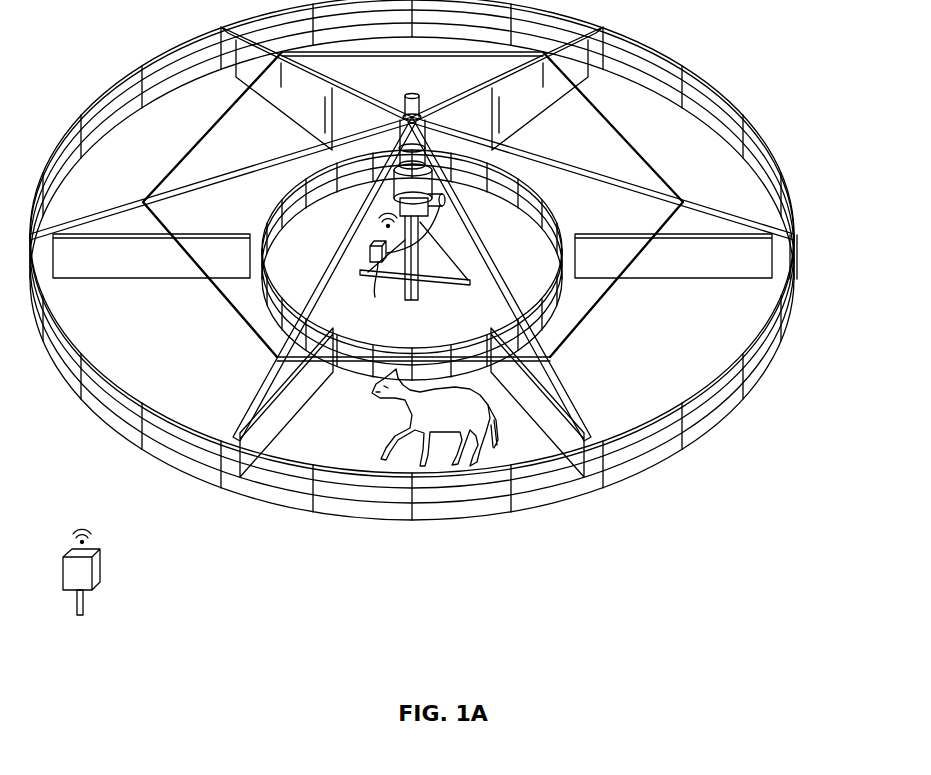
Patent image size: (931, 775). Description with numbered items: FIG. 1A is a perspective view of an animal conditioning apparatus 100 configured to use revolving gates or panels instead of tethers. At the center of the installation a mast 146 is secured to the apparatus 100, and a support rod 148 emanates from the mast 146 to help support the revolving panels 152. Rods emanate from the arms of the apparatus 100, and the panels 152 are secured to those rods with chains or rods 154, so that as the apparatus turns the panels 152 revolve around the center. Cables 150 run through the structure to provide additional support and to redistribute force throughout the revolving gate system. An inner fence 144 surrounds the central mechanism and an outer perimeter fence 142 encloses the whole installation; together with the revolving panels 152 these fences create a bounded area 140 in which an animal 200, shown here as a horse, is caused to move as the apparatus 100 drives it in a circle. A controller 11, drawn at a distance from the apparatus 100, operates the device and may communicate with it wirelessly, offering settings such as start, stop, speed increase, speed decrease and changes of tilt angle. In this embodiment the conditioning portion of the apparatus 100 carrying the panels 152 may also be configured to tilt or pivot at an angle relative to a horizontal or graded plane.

The outer perimeter fence 142 is at (132, 72).
The inner fence 144 is at (427, 350).
The mast 146 is at (414, 99).
The support rod 148 is at (93, 213).
The chains or rods 154 is at (597, 217).
The cables 150 is at (602, 306).
The panels 152 is at (774, 257).
The bounded area 140 is at (320, 444).
The apparatus 100 is at (374, 322).
The animal 200 is at (455, 418).
The controller 11 is at (98, 568).